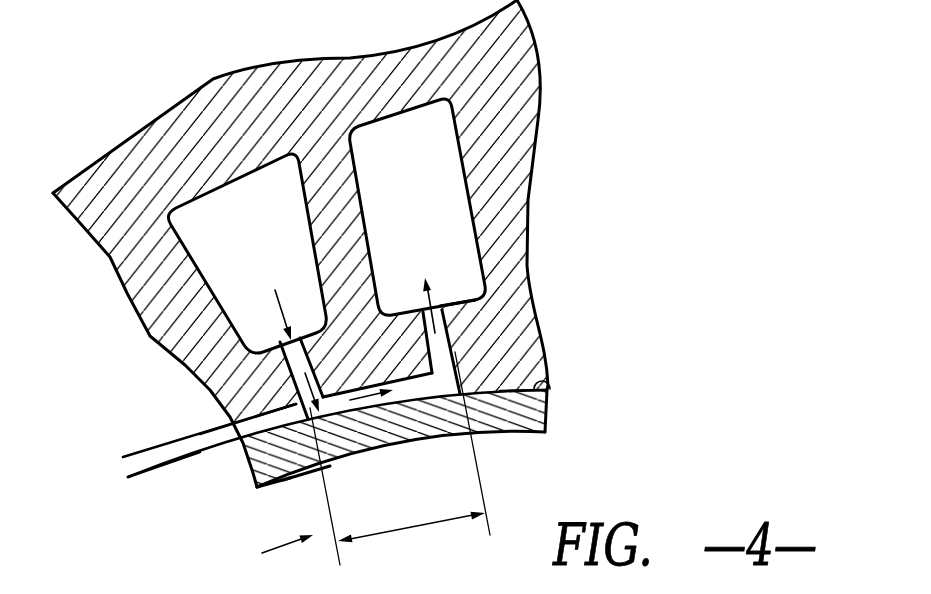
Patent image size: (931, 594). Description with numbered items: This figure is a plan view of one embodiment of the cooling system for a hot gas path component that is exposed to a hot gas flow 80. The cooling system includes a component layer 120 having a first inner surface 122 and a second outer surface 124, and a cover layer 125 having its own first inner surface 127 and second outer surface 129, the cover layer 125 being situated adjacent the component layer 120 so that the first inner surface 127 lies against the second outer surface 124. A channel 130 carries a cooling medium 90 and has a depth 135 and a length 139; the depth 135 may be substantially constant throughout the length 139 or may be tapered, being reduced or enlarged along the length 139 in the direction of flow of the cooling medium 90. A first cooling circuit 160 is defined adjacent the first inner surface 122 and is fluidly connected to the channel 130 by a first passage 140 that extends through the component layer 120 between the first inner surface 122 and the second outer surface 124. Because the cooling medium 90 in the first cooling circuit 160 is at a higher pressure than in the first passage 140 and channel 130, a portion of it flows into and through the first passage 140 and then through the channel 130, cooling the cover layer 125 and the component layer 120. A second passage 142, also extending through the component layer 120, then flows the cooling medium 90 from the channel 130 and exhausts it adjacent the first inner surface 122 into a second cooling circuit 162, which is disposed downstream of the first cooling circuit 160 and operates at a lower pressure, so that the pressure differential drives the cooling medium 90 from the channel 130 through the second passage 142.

The hot gas flow 80 is at (267, 553).
The cooling medium 90 is at (352, 401).
The component layer 120 is at (557, 353).
The first inner surface 122 is at (462, 305).
The second outer surface 124 is at (544, 376).
The cover layer 125 is at (562, 408).
The first inner surface 127 is at (265, 477).
The second outer surface 129 is at (283, 488).
The channel 130 is at (460, 392).
The depth 135 is at (166, 516).
The length 139 is at (390, 533).
The first passage 140 is at (292, 405).
The second passage 142 is at (438, 353).
The first cooling circuit 160 is at (235, 195).
The second cooling circuit 162 is at (413, 137).